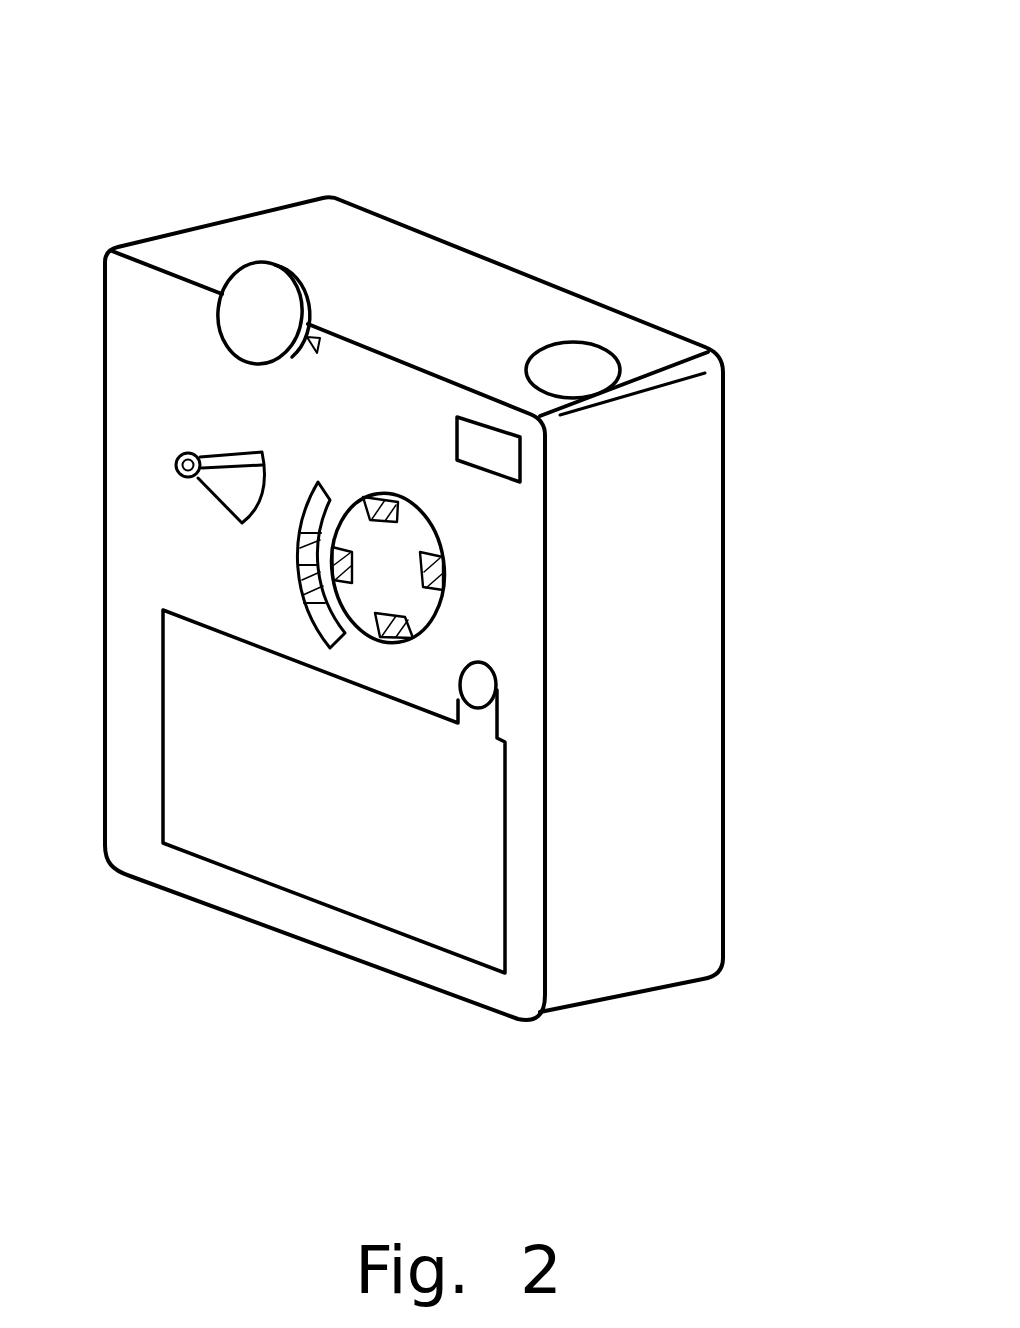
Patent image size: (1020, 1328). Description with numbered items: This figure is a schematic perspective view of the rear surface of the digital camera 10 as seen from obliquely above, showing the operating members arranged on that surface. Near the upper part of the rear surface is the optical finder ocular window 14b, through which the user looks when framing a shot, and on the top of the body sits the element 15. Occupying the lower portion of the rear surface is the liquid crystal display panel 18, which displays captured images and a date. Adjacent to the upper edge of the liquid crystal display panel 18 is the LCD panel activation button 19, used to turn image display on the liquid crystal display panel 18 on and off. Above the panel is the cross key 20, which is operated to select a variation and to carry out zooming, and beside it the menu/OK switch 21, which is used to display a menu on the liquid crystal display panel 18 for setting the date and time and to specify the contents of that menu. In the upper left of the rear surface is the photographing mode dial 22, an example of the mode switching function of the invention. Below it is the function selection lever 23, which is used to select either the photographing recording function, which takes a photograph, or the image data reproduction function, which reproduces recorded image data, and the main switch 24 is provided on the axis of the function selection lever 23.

The digital camera 10 is at (704, 146).
The optical finder ocular window 14b is at (503, 452).
The shutter release button 15 is at (588, 367).
The liquid crystal display panel 18 is at (460, 833).
The LCD panel activation button 19 is at (477, 683).
The cross key 20 is at (340, 562).
The menu/OK switch 21 is at (303, 560).
The photographing mode dial 22 is at (252, 293).
The function selection lever 23 is at (227, 452).
The main switch 24 is at (176, 460).